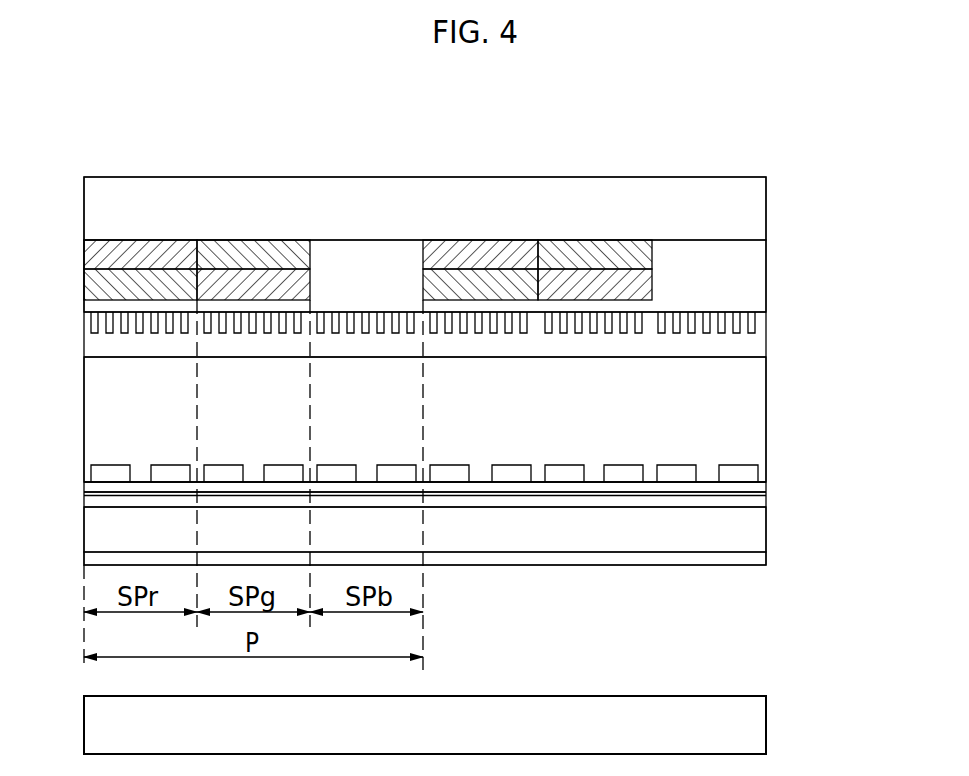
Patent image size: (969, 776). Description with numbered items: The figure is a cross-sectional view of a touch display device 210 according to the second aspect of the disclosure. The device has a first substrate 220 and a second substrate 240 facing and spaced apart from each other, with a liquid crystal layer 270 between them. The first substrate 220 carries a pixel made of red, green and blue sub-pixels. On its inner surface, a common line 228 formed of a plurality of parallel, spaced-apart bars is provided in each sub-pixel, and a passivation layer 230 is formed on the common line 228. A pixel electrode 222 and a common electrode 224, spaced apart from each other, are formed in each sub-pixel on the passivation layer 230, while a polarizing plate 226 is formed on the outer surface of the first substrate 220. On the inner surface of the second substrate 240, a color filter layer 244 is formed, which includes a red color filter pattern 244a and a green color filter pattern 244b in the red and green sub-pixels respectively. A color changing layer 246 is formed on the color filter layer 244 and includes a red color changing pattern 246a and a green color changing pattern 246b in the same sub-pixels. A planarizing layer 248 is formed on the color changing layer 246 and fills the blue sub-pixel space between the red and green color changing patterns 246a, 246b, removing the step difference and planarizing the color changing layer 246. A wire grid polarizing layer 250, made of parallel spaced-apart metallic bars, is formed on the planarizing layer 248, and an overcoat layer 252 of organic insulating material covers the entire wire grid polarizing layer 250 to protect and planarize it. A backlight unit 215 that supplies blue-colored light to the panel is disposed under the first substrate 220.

The touch display device 210 is at (467, 156).
The backlight unit 215 is at (766, 722).
The first substrate 220 is at (766, 527).
The pixel electrode 222 is at (448, 483).
The common electrode 224 is at (514, 483).
The polarizing plate 226 is at (766, 556).
The common line 228 is at (766, 498).
The passivation layer 230 is at (766, 487).
The second substrate 240 is at (766, 203).
The color filter layer 244 is at (197, 173).
The red color filter pattern 244a is at (140, 240).
The green color filter pattern 244b is at (260, 240).
The color changing layer 246 is at (197, 356).
The red color changing pattern 246a is at (150, 300).
The green color changing pattern 246b is at (247, 300).
The planarizing layer 248 is at (766, 271).
The wire grid polarizing layer 250 is at (757, 322).
The overcoat layer 252 is at (766, 352).
The liquid crystal layer 270 is at (766, 402).